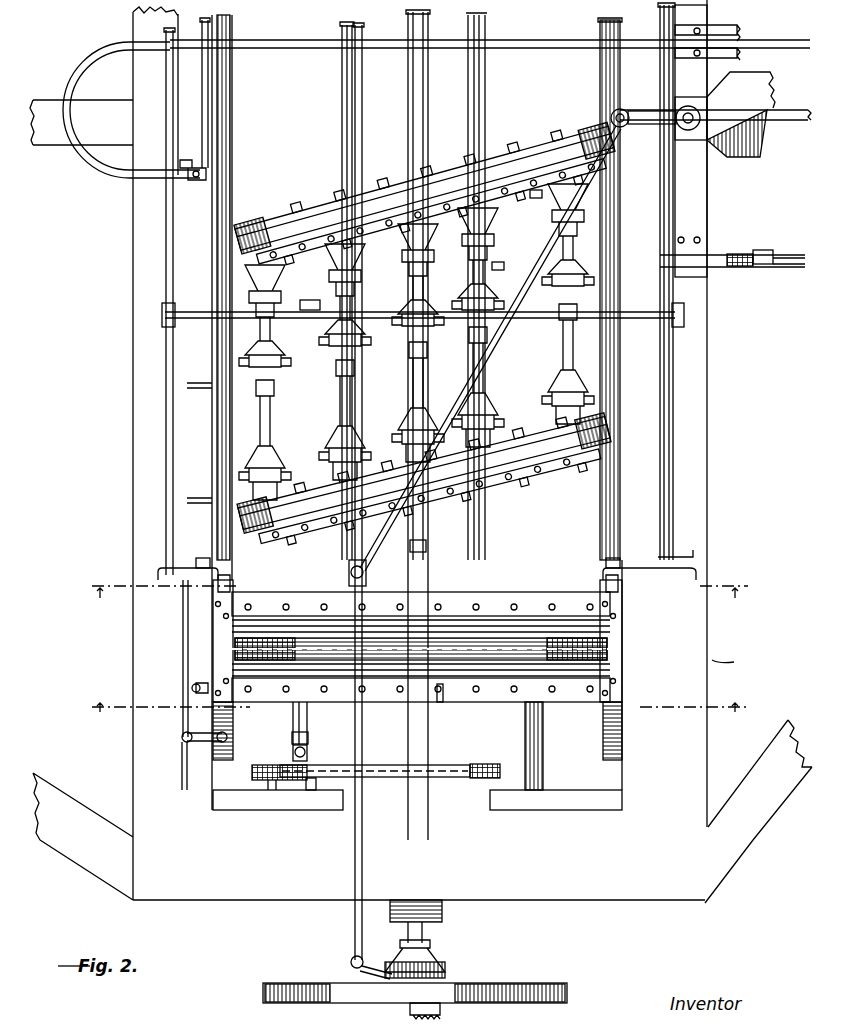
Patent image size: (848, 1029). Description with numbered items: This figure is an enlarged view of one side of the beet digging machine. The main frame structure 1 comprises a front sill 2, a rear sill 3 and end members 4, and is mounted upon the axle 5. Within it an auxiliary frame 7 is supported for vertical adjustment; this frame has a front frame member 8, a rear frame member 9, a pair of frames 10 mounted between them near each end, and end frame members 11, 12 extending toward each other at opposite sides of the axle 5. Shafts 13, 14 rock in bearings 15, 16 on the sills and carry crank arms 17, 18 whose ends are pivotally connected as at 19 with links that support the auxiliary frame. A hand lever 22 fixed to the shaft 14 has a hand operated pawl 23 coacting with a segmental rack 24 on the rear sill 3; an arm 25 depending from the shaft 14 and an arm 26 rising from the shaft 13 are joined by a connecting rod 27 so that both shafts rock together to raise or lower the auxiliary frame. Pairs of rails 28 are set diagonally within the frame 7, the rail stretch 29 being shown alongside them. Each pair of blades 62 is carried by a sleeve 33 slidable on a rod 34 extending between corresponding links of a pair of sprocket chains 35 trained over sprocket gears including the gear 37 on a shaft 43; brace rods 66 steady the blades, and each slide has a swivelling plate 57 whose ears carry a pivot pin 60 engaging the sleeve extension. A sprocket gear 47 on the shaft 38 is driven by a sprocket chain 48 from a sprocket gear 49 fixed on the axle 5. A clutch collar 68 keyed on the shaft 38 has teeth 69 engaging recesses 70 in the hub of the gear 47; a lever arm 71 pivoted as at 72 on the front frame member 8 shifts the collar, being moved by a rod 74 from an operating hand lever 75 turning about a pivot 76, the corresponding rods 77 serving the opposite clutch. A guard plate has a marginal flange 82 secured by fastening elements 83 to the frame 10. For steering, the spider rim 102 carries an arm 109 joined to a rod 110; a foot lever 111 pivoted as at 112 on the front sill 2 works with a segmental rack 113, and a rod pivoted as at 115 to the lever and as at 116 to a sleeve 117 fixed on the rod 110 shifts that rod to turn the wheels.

The frame structure 1 is at (143, 772).
The front sill 2 is at (133, 655).
The rear sill 3 is at (416, 413).
The end members 4 is at (416, 772).
The axle 5 is at (430, 110).
The auxiliary frame 7 is at (606, 92).
The front frame member 8 is at (220, 642).
The rear frame member 9 is at (605, 516).
The frames 10 is at (440, 694).
The end frame member 11 is at (280, 800).
The end frame member 12 is at (532, 800).
The shaft 13 is at (166, 409).
The shaft 14 is at (672, 360).
The bearings 15 is at (160, 566).
The bearings 16 is at (684, 566).
The crank arms 17 is at (200, 558).
The crank arms 18 is at (636, 558).
The pivotal connection 19 is at (230, 584).
The hand lever 22 is at (758, 270).
The hand operated pawl 23 is at (765, 252).
The segmental rack 24 is at (735, 252).
The arm 25 is at (686, 313).
The arm 26 is at (162, 313).
The connecting rod 27 is at (316, 300).
The rails 28 is at (376, 180).
The chain link 29 is at (542, 196).
The sleeve 33 is at (496, 266).
The rod 34 is at (342, 110).
The sprocket chains 35 is at (455, 650).
The sprocket gear 37 is at (600, 648).
The shaft 38 is at (308, 736).
The shaft 43 is at (490, 738).
The sprocket gear 47 is at (266, 786).
The sprocket chain 48 is at (336, 765).
The sprocket gear 49 is at (468, 768).
The plate 57 is at (330, 192).
The pivot pin 60 is at (428, 542).
The blades 62 is at (340, 364).
The brace rods 66 is at (412, 262).
The clutch collar 68 is at (294, 748).
The teeth 69 is at (276, 766).
The recesses 70 is at (312, 790).
The lever arm 71 is at (200, 742).
The pivot 72 is at (188, 733).
The rod 74 is at (183, 642).
The operating hand lever 75 is at (152, 170).
The pivot 76 is at (198, 168).
The rods 77 is at (204, 106).
The marginal flange 82 is at (576, 692).
The fastening elements 83 is at (524, 746).
The rim 102 is at (446, 972).
The arm 109 is at (351, 966).
The rod 110 is at (355, 886).
The foot lever 111 is at (777, 112).
The pivot 112 is at (700, 126).
The segmental rack 113 is at (764, 76).
The pivotal connection 115 is at (624, 110).
The pivotal connection 116 is at (352, 570).
The sleeve 117 is at (367, 574).